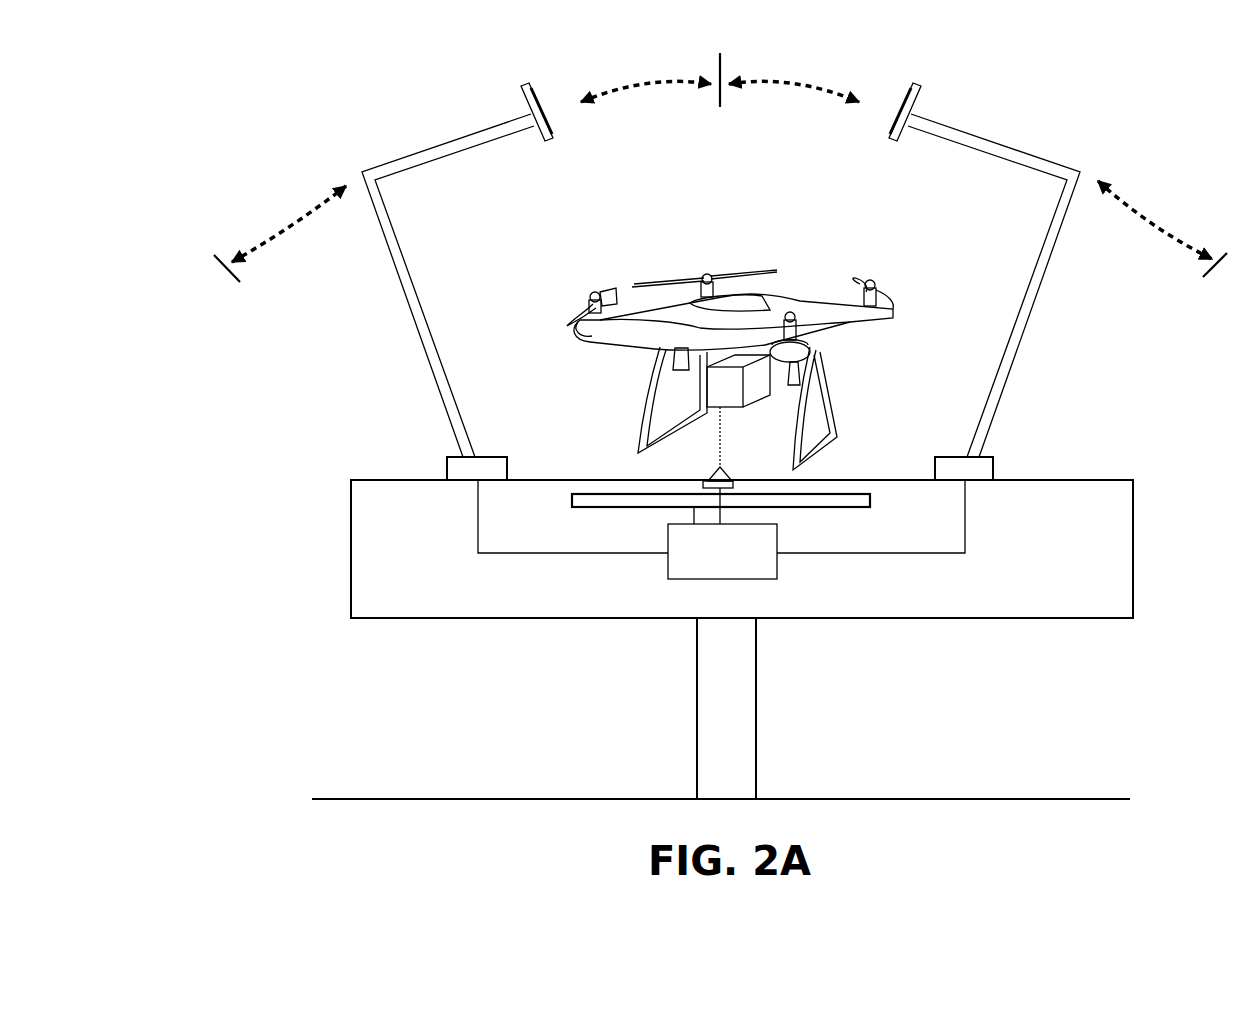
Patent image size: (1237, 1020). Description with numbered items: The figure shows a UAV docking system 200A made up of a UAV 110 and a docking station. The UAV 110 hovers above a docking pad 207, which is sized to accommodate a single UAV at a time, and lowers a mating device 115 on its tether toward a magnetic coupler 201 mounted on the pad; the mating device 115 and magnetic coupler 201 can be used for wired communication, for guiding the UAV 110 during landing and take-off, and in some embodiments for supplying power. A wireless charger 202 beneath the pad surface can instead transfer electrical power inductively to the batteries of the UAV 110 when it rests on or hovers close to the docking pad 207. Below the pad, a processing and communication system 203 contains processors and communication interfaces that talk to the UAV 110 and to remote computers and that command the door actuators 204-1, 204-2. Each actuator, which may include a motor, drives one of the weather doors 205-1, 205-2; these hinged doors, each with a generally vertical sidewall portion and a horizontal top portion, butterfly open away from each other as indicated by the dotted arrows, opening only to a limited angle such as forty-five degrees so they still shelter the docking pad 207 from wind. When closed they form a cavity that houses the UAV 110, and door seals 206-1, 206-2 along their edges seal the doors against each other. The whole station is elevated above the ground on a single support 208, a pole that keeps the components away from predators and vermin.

The UAV 110 is at (578, 272).
The mating device 115 is at (725, 477).
The UAV docking system 200A is at (200, 192).
The magnetic coupler 201 is at (706, 482).
The wireless charger 202 is at (587, 493).
The processing and communication system 203 is at (722, 533).
The door actuator 204-1 is at (501, 457).
The door actuator 204-2 is at (938, 457).
The weather door 205-1 is at (382, 166).
The weather door 205-2 is at (1052, 166).
The door seal 206-1 is at (520, 86).
The door seal 206-2 is at (921, 86).
The docking pad 207 is at (614, 480).
The support 208 is at (697, 755).